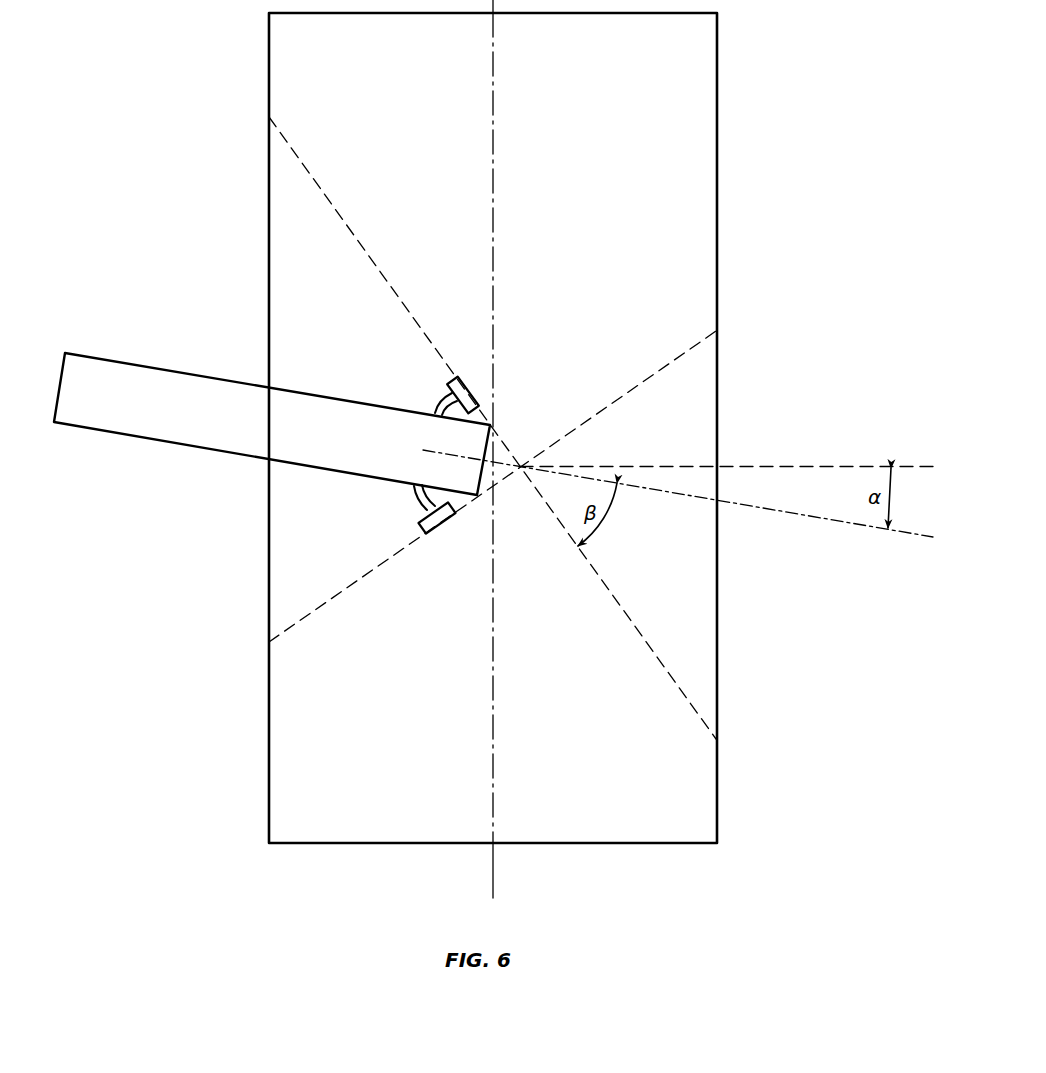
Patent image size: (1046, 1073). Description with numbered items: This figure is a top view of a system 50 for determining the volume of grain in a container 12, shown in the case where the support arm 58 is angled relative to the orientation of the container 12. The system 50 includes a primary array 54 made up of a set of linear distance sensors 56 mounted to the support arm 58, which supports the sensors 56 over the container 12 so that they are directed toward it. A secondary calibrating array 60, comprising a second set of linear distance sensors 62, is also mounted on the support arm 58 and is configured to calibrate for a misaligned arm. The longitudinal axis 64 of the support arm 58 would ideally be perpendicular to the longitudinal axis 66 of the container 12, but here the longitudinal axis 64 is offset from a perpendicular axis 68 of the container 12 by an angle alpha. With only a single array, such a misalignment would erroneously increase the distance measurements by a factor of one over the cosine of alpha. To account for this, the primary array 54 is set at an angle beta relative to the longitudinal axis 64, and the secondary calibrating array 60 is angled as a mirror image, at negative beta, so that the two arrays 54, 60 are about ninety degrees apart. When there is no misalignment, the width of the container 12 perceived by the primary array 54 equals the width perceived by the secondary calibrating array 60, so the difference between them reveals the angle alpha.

The container 12 is at (718, 152).
The system 50 is at (472, 351).
The array 54 is at (477, 387).
The linear distance sensors 56 is at (455, 383).
The support arm 58 is at (182, 447).
The secondary calibrating array 60 is at (444, 529).
The linear distance sensors 62 is at (421, 514).
The longitudinal axis 64 is at (803, 517).
The longitudinal axis 66 is at (494, 701).
The perpendicular axis 68 is at (790, 467).